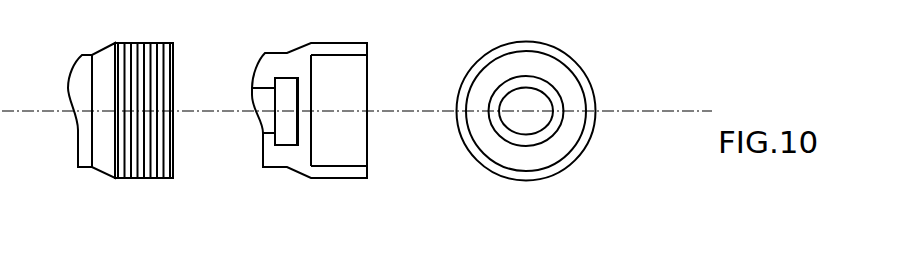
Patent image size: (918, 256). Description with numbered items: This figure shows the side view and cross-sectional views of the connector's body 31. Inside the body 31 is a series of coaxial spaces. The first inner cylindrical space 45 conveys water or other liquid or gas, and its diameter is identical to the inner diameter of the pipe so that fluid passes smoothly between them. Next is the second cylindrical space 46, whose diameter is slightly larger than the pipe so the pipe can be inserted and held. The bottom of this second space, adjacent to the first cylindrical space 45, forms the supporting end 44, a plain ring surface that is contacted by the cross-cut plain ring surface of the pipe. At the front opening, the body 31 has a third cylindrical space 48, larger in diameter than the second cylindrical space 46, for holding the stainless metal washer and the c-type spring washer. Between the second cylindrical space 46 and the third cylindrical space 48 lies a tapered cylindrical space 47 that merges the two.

The body 31 is at (598, 98).
The supporting end 44 is at (263, 160).
The first inner cylindrical space 45 is at (268, 100).
The second cylindrical space 46 is at (274, 141).
The tapered cylindrical space 47 is at (287, 122).
The third cylindrical space 48 is at (355, 100).